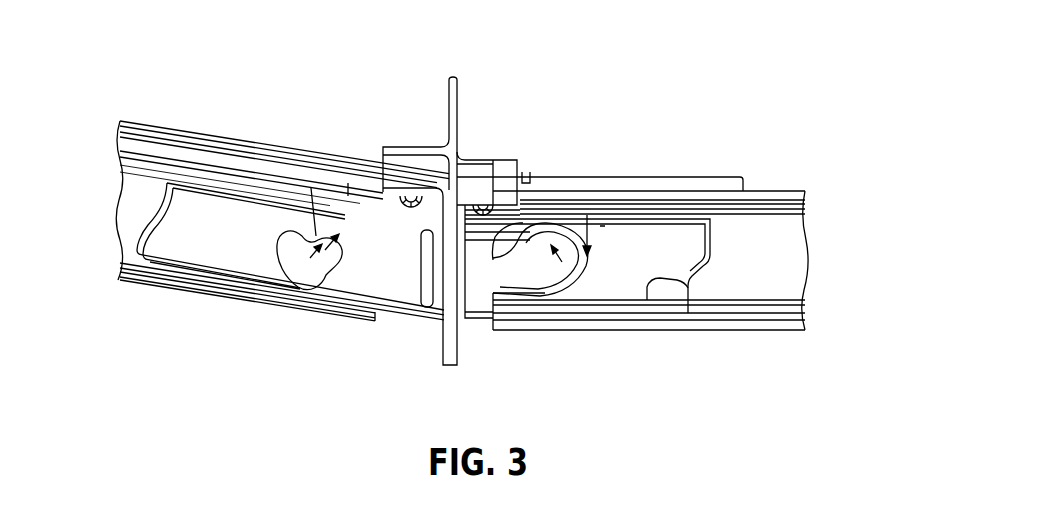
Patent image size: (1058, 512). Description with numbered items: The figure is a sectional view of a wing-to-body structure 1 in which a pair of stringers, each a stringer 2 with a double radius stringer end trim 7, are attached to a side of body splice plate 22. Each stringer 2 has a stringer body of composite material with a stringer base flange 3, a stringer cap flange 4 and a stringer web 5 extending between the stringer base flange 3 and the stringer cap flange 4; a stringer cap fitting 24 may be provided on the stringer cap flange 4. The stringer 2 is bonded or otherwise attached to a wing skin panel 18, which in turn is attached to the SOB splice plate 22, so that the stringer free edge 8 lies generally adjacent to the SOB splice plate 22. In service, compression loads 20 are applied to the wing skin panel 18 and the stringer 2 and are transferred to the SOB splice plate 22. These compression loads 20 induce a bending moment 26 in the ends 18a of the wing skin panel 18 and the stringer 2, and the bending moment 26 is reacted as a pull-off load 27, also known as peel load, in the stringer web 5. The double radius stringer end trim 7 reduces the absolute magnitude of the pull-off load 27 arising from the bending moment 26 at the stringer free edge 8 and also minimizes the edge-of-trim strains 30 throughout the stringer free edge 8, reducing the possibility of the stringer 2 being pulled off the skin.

The wing-to-body structure 1 is at (474, 85).
The stringer 2 is at (400, 328).
The stringer base flange 3 is at (208, 200).
The stringer cap flange 4 is at (198, 262).
The stringer web 5 is at (462, 228).
The double radius stringer end trim 7 is at (352, 251).
The stringer free edge 8 is at (497, 252).
The wing skin panel 18 is at (170, 152).
The ends of the wing skin panel 18a is at (365, 186).
The compression loads 20 is at (86, 170).
The side of body (SOB) splice plate 22 is at (493, 183).
The stringer cap fitting 24 is at (290, 312).
The bending moment 26 is at (95, 206).
The pull-off load 27 is at (292, 232).
The edge-of-trim strains 30 is at (330, 290).